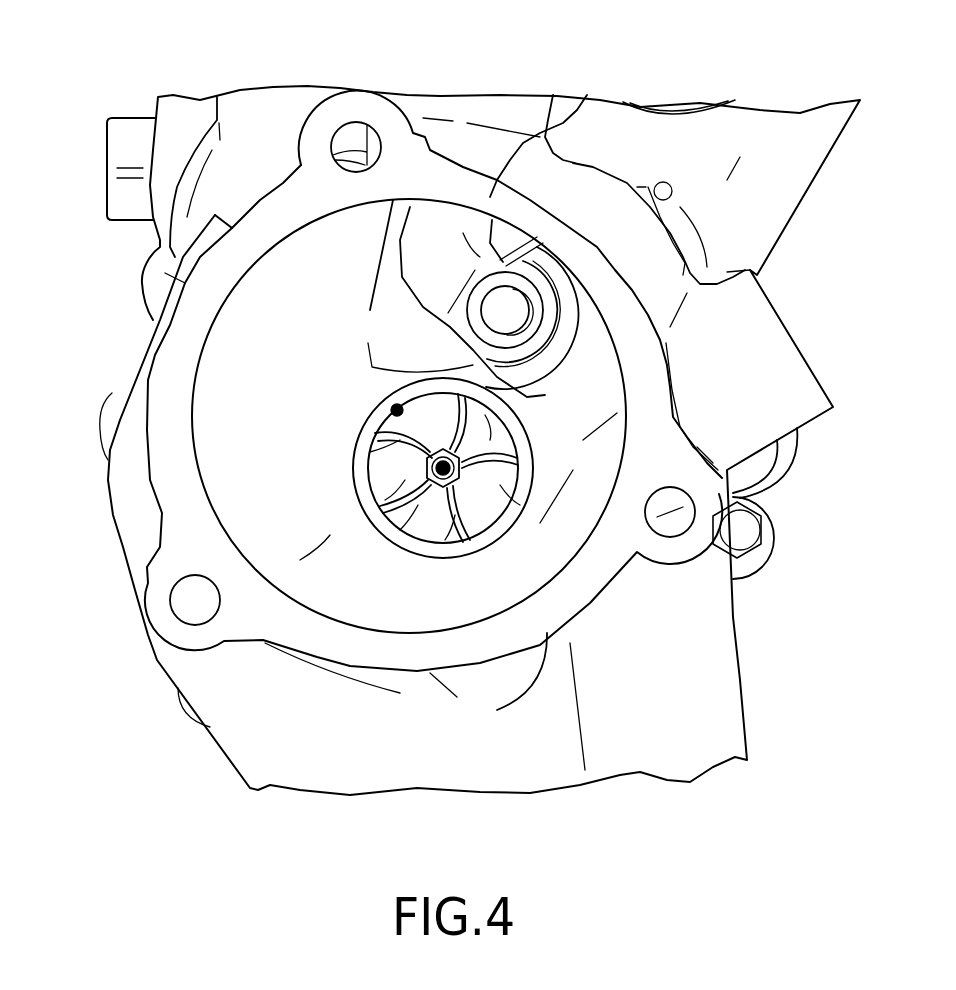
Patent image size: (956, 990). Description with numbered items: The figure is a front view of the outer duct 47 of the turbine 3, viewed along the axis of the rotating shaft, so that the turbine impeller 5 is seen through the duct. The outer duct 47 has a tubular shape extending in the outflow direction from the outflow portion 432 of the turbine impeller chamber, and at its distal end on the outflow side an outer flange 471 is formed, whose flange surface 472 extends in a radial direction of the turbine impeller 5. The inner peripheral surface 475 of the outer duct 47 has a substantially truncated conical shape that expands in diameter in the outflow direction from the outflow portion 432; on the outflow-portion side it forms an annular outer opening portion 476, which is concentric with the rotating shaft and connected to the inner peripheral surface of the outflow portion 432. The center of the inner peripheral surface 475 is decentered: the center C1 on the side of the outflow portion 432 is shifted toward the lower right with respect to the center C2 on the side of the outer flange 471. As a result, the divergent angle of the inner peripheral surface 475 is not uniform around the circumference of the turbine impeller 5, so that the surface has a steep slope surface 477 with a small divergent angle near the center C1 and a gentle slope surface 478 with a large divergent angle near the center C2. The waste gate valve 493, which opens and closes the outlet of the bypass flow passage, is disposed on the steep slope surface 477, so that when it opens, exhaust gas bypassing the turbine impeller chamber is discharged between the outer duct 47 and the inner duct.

The turbine 3 is at (131, 29).
The outer duct 47 is at (468, 160).
The outer flange 471 is at (578, 160).
The flange surface 472 is at (560, 140).
The inner peripheral surface 475 is at (234, 413).
The outer opening portion 476 is at (353, 458).
The steep slope surface 477 is at (318, 543).
The gentle slope surface 478 is at (313, 337).
The waste gate valve 493 is at (563, 312).
The outflow portion 432 is at (353, 483).
The turbine impeller 5 is at (353, 507).
The center of the inner peripheral surface on the side of the outflow portion C1 is at (443, 467).
The center of the inner peripheral surface on the side of the outer flange C2 is at (397, 410).